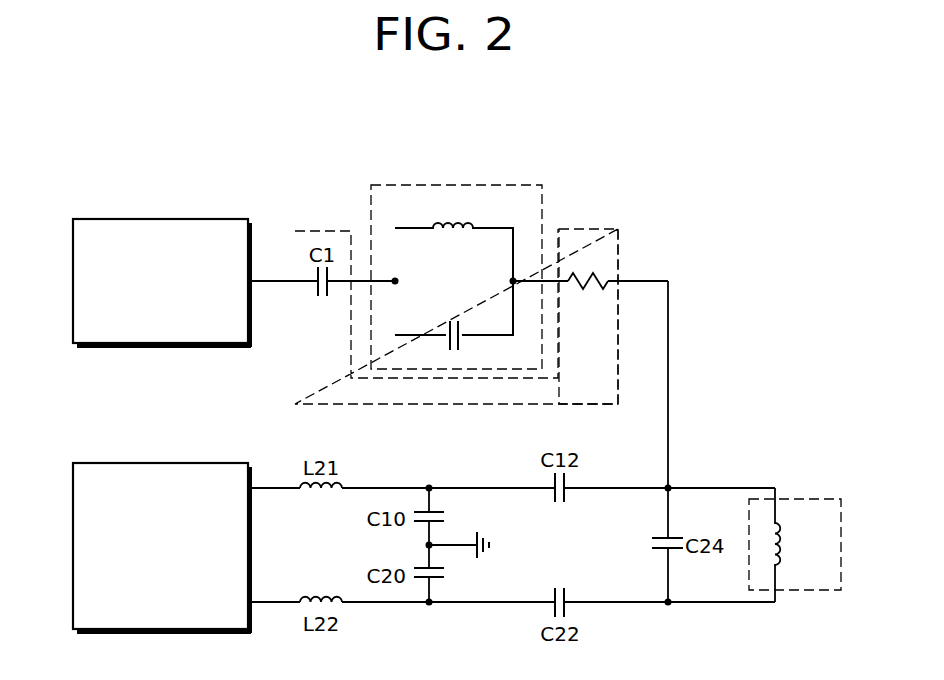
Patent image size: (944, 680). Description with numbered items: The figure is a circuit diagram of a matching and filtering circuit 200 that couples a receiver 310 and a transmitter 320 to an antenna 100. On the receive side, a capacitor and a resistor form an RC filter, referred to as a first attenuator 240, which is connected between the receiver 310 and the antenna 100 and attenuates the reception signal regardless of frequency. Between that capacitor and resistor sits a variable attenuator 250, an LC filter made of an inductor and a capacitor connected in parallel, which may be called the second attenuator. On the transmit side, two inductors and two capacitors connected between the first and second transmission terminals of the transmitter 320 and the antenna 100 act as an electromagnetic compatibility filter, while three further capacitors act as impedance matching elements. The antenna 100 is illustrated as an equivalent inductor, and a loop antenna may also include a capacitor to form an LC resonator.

The antenna 100 is at (815, 499).
The matching and filtering circuit 200 is at (410, 440).
The first attenuator 240 is at (587, 229).
The variable attenuator 250 is at (496, 185).
The receiver 310 is at (192, 219).
The transmitter 320 is at (192, 463).